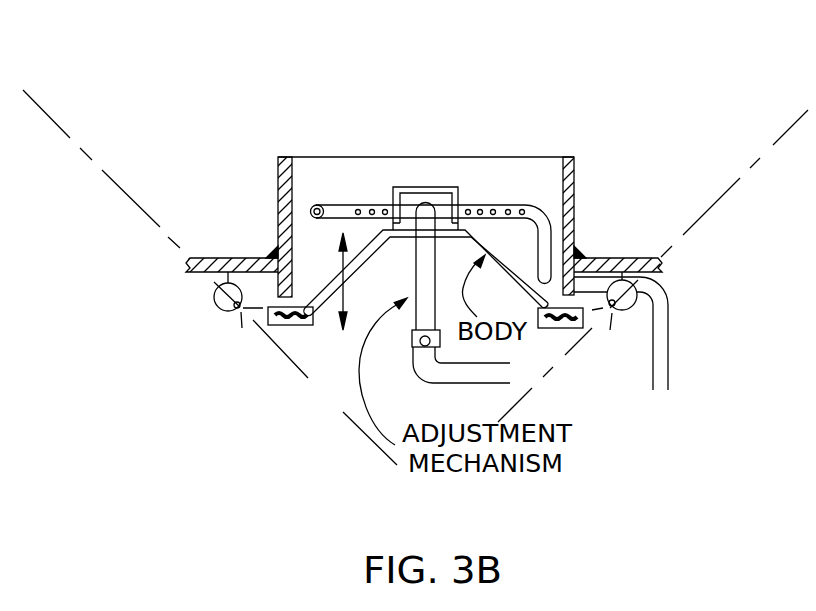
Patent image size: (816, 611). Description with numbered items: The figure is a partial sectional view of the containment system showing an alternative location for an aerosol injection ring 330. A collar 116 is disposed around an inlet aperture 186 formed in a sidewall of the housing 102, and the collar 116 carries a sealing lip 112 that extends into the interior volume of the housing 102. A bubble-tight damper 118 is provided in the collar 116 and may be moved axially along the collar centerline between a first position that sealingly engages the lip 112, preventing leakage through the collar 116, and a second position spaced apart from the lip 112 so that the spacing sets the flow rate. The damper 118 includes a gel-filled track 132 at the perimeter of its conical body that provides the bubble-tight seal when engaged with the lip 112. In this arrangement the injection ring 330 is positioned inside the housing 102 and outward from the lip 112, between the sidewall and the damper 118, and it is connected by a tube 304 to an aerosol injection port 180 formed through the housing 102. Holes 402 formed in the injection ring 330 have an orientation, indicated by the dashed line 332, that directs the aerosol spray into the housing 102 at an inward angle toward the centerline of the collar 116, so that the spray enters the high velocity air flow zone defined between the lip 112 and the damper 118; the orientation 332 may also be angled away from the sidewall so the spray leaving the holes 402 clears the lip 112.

The housing 102 is at (633, 258).
The sealing lip 112 is at (277, 289).
The collar 116 is at (278, 157).
The bubble-tight damper 118 is at (361, 229).
The gel-filled track 132 is at (292, 326).
The aerosol injection port 180 is at (660, 395).
The inlet aperture 186 is at (510, 238).
The tube 304 is at (670, 337).
The aerosol injection ring 330 is at (214, 292).
The orientation of the holes 332 is at (92, 160).
The holes 402 is at (214, 305).